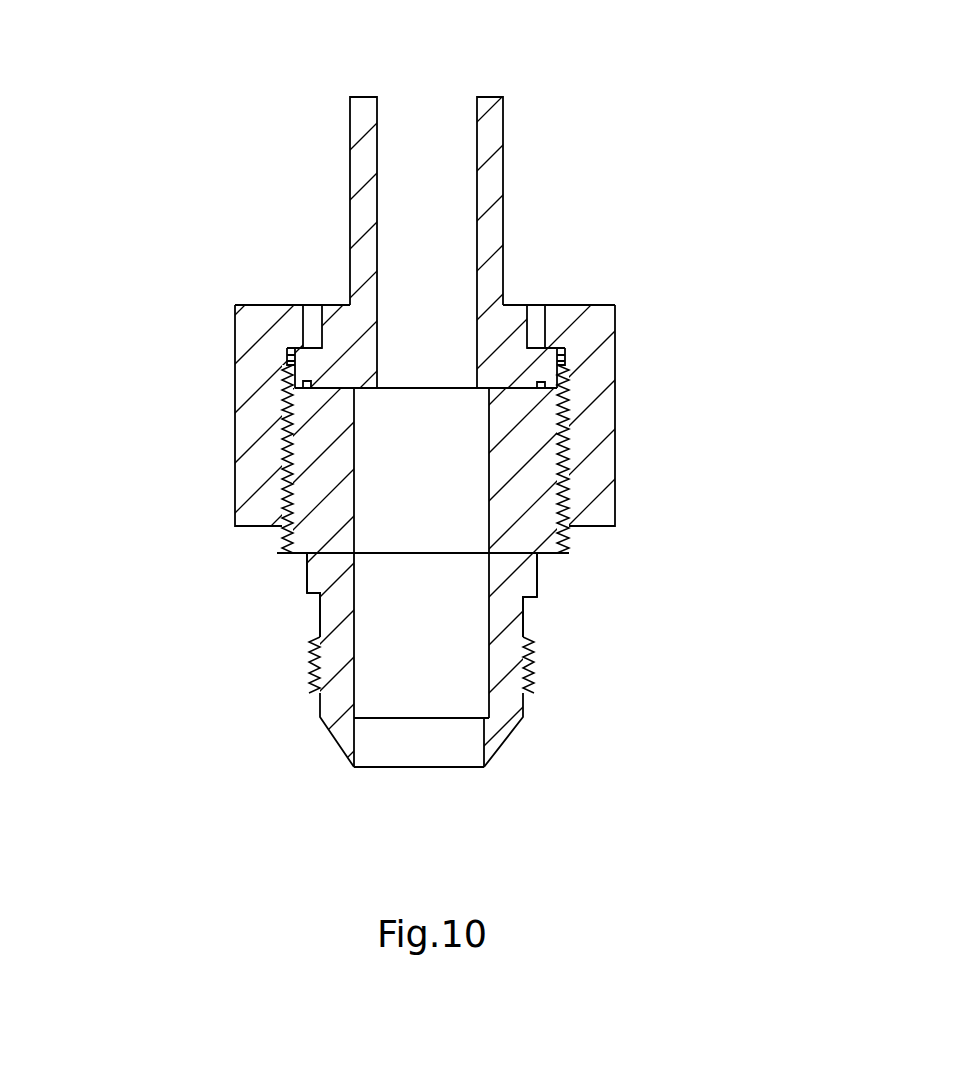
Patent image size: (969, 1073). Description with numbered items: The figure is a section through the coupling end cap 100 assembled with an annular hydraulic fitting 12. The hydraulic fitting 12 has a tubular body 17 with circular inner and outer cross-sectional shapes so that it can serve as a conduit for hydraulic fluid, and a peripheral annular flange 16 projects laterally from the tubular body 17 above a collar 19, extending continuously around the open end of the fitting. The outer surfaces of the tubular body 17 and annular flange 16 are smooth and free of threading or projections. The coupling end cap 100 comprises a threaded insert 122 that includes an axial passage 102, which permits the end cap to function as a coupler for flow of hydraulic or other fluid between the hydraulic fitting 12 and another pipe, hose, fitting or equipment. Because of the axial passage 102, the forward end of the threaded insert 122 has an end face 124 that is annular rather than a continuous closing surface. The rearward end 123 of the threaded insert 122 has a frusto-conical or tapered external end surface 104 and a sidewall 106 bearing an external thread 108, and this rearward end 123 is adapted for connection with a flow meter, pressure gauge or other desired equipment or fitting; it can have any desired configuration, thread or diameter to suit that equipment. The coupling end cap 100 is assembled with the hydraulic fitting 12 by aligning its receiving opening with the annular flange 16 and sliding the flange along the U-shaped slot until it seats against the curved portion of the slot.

The hydraulic fitting 12 is at (493, 98).
The tubular body 17 is at (492, 197).
The collar 19 is at (335, 328).
The annular flange 16 is at (285, 364).
The axial passage 102 is at (403, 507).
The end face 124 is at (517, 392).
The rearward end 123 is at (307, 573).
The threaded insert 122 is at (310, 609).
The external thread 108 is at (308, 691).
The tapered external end surface 104 is at (332, 735).
The sidewall 106 is at (520, 717).
The coupling end cap 100 is at (557, 583).